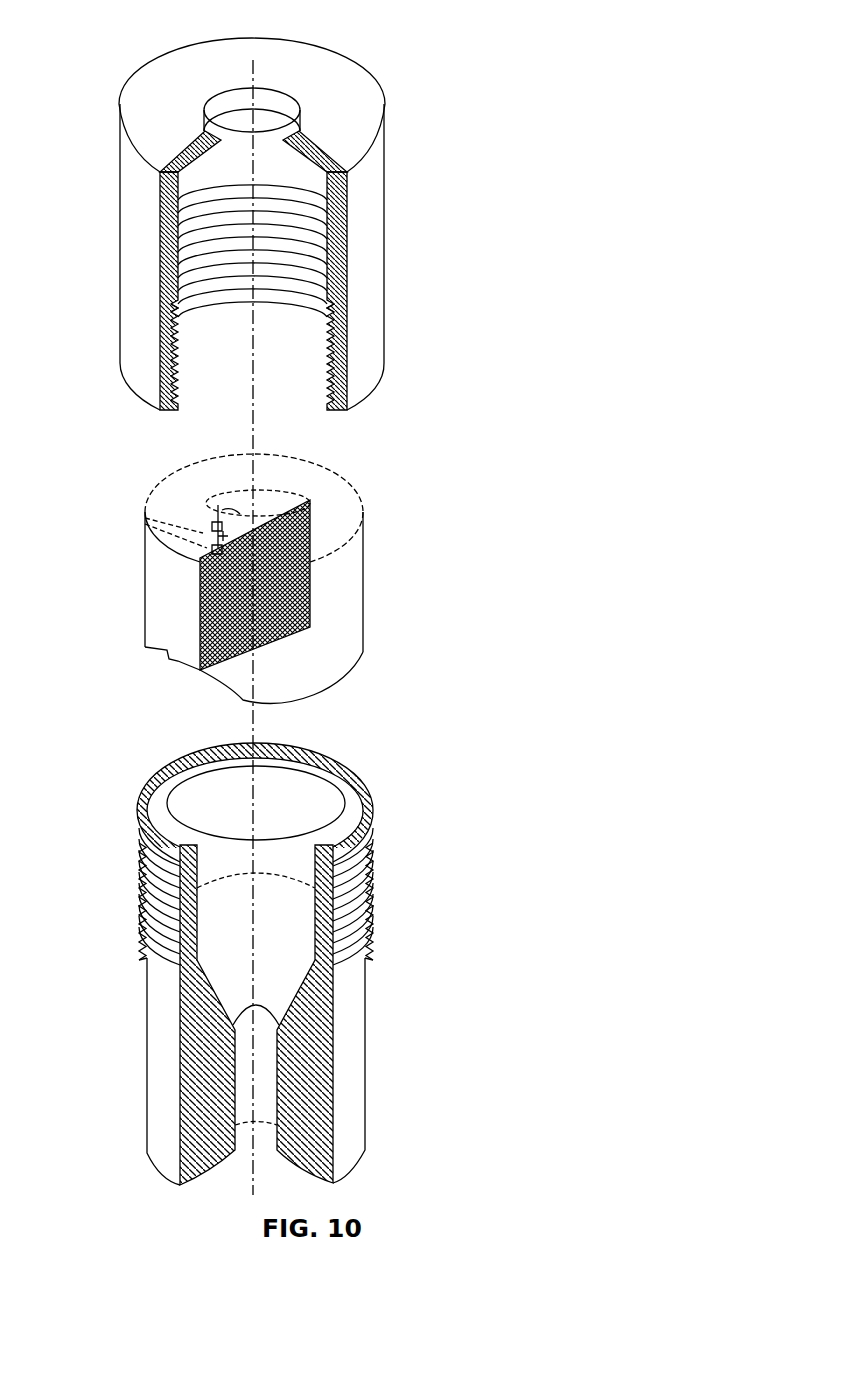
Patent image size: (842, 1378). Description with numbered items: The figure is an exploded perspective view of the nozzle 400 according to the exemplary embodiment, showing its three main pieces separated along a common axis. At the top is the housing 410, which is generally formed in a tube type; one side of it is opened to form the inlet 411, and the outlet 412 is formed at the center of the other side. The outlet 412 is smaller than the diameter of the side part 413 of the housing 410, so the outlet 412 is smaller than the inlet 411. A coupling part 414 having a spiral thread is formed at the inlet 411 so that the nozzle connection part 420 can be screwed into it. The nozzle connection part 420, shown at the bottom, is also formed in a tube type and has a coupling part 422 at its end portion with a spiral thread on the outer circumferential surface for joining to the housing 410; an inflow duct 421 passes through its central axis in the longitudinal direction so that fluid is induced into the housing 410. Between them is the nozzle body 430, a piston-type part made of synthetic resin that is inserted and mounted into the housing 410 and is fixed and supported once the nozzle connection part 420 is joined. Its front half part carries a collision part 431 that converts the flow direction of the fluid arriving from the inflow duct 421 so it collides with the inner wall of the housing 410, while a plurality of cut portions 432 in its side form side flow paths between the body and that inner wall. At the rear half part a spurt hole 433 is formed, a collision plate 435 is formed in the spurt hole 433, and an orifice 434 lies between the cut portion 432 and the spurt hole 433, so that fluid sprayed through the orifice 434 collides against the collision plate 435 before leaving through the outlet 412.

The nozzle 400 is at (566, 537).
The housing 410 is at (384, 75).
The inlet 411 is at (291, 348).
The outlet 412 is at (268, 124).
The side part 413 is at (333, 218).
The coupling part 414 is at (327, 268).
The nozzle connection part 420 is at (384, 802).
The inflow duct 421 is at (296, 804).
The coupling part 422 is at (377, 917).
The nozzle body 430 is at (377, 490).
The collision part 431 is at (185, 658).
The cut portions 432 is at (160, 590).
The spurt hole 433 is at (207, 545).
The orifice 434 is at (205, 561).
The collision plate 435 is at (210, 505).